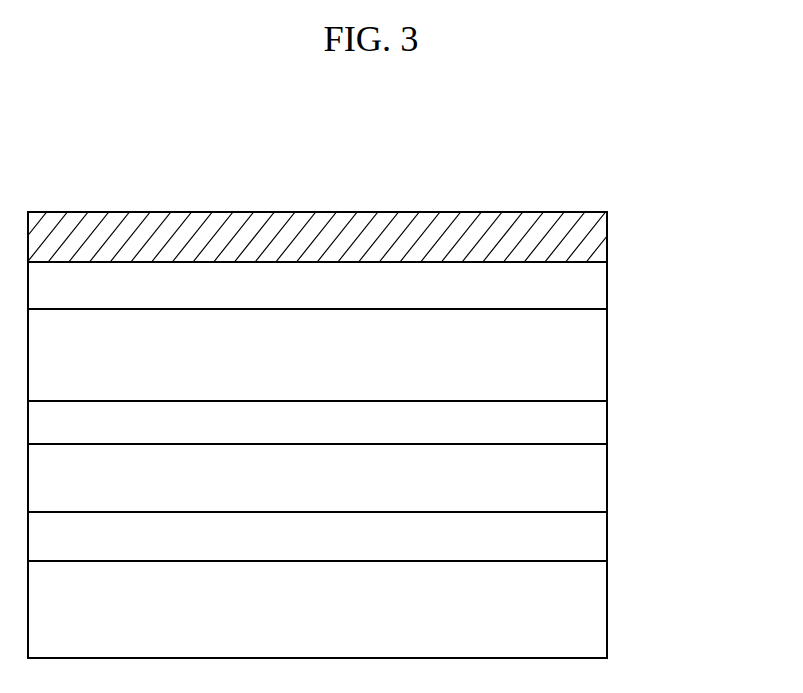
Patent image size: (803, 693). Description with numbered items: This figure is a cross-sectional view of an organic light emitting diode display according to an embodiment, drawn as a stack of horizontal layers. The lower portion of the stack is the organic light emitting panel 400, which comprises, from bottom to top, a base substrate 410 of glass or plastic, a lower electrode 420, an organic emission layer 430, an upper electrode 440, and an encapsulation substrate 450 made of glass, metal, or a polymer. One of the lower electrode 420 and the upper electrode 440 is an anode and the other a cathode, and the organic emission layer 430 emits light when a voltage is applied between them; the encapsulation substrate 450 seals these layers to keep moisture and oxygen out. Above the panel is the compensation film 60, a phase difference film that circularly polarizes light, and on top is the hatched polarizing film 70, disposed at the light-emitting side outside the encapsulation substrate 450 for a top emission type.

The polarizing film 70 is at (603, 241).
The compensation film 60 is at (603, 287).
The organic light emitting panel 400 is at (672, 338).
The encapsulation substrate 450 is at (603, 357).
The upper electrode 440 is at (603, 426).
The organic emission layer 430 is at (603, 482).
The lower electrode 420 is at (603, 540).
The base substrate 410 is at (603, 620).